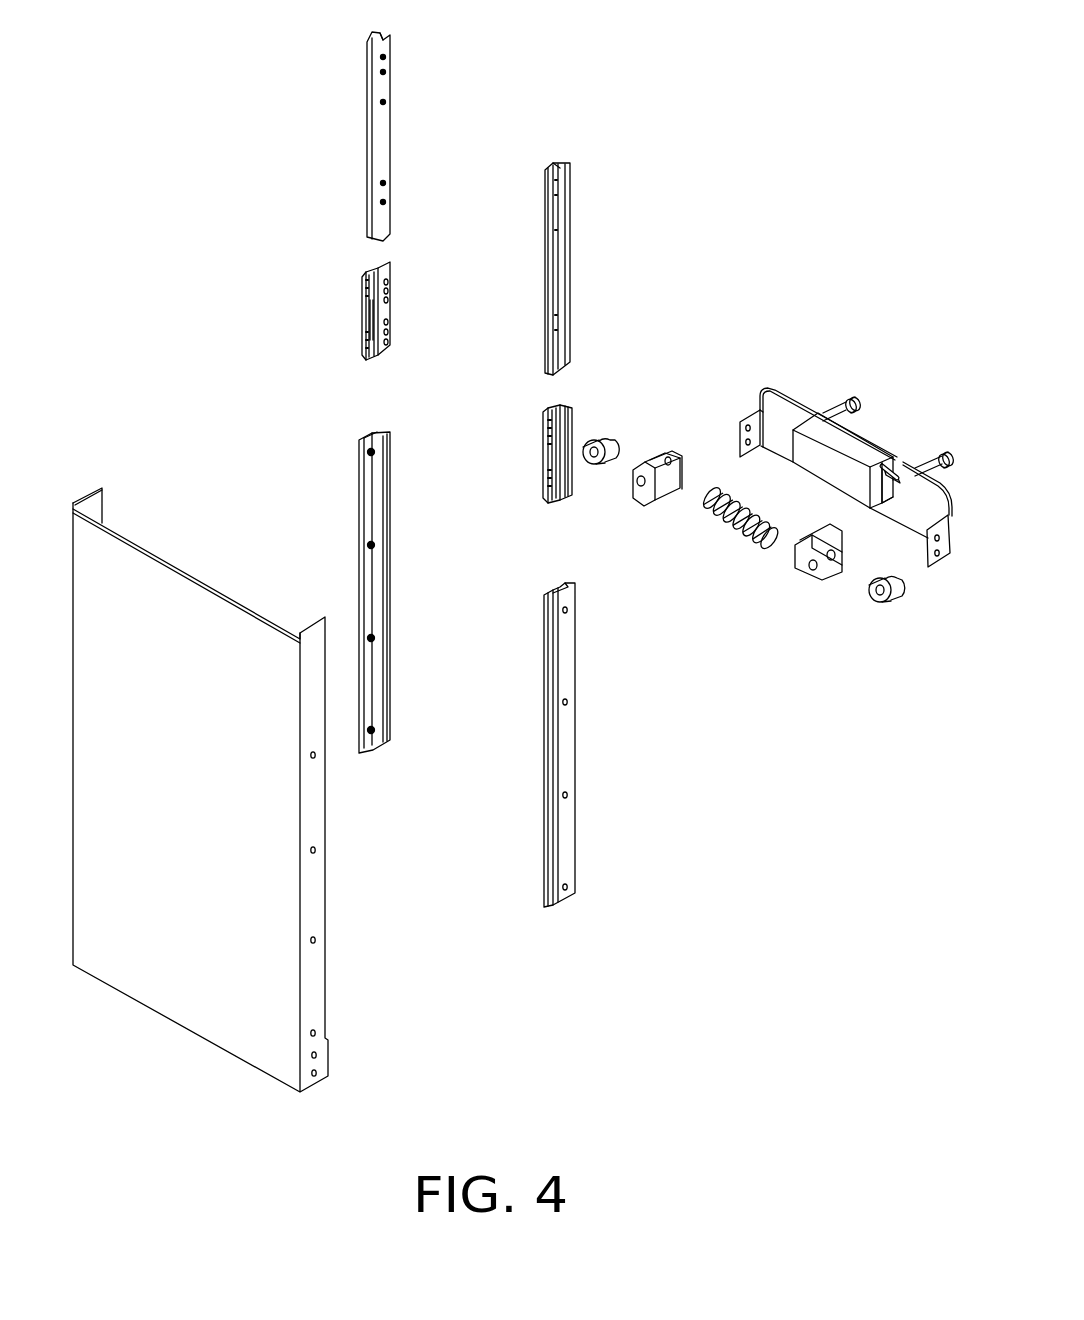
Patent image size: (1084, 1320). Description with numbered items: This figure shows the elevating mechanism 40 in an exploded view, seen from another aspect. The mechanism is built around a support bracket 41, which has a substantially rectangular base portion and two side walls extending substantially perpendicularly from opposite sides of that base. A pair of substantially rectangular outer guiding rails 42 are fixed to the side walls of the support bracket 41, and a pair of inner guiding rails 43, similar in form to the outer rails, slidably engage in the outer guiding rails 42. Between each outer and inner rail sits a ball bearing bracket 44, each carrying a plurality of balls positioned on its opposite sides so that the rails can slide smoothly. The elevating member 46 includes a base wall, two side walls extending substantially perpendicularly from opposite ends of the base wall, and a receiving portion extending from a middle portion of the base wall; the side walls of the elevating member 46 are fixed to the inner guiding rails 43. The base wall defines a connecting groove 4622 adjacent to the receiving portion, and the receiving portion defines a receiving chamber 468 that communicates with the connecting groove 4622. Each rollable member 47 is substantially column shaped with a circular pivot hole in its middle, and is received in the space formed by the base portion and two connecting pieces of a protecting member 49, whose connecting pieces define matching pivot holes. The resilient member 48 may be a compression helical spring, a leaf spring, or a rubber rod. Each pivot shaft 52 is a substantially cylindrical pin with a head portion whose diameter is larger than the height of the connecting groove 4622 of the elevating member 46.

The elevating mechanism 40 is at (707, 146).
The support bracket 41 is at (167, 598).
The outer guiding rail 42 is at (375, 508).
The inner guiding rail 43 is at (380, 85).
The ball bearing bracket 44 is at (383, 307).
The elevating member 46 is at (879, 403).
The rollable member 47 is at (603, 437).
The resilient member 48 is at (742, 535).
The protecting member 49 is at (653, 492).
The pivot shaft 52 is at (838, 405).
The receiving chamber 468 is at (883, 488).
The connecting groove 4622 is at (893, 478).